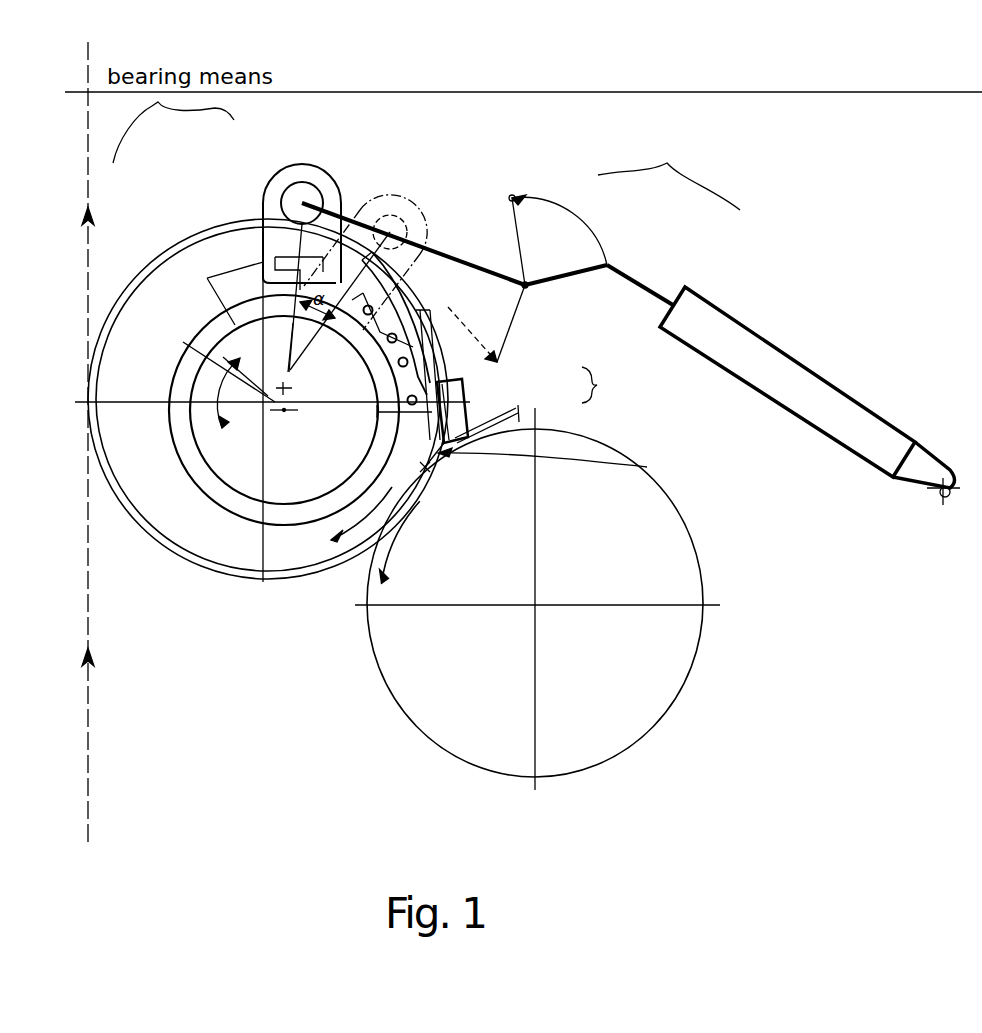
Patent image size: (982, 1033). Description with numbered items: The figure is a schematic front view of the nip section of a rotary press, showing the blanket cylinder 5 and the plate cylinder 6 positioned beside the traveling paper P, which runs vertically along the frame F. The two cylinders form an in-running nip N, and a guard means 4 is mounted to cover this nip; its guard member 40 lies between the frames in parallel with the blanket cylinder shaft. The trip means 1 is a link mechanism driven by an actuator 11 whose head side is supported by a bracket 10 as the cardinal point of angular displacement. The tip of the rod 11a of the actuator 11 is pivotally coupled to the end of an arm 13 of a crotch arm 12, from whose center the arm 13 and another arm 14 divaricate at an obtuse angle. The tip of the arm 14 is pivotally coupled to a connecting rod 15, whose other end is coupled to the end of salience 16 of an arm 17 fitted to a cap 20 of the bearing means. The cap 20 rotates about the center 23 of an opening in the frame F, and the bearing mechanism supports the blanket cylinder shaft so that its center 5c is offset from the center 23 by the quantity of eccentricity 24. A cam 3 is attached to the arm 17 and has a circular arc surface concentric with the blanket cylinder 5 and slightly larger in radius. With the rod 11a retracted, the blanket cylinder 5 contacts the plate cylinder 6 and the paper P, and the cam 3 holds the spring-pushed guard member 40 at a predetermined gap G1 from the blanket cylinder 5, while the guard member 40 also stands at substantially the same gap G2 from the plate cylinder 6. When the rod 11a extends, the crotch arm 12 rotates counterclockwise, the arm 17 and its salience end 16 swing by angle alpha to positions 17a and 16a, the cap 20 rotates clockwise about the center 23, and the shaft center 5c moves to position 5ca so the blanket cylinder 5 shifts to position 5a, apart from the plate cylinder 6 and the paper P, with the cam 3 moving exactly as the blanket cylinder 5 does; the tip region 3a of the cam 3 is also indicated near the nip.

The frame F is at (883, 92).
The traveling paper P is at (96, 733).
The blanket cylinder 5 is at (185, 252).
The blanket cylinder tripped position 5a is at (212, 226).
The center of the shaft of the blanket cylinder 5c is at (270, 412).
The displaced position of the shaft center 5ca is at (202, 374).
The cap 20 is at (223, 500).
The center of the opening 23 is at (286, 414).
The quantity of eccentricity 24 is at (292, 388).
The arm 17 is at (278, 187).
The end of salience 16 is at (302, 182).
The displaced position of the arm 17a is at (381, 212).
The displaced position of the end of salience 16a is at (394, 200).
The connecting rod 15 is at (443, 262).
The arm 14 is at (502, 262).
The arm 13 is at (578, 274).
The crotch arm 12 is at (528, 290).
The rod 11a is at (630, 268).
The actuator 11 is at (783, 350).
The bracket 10 is at (930, 503).
The trip means 1 is at (676, 172).
The cam 3 is at (368, 298).
The guard plate tip 3a is at (432, 470).
The guard member 40 is at (477, 383).
The predetermined gap G1 is at (450, 309).
The gap G2 is at (527, 403).
The guard means 4 is at (637, 385).
The in-running nip N is at (639, 456).
The plate cylinder 6 is at (682, 528).